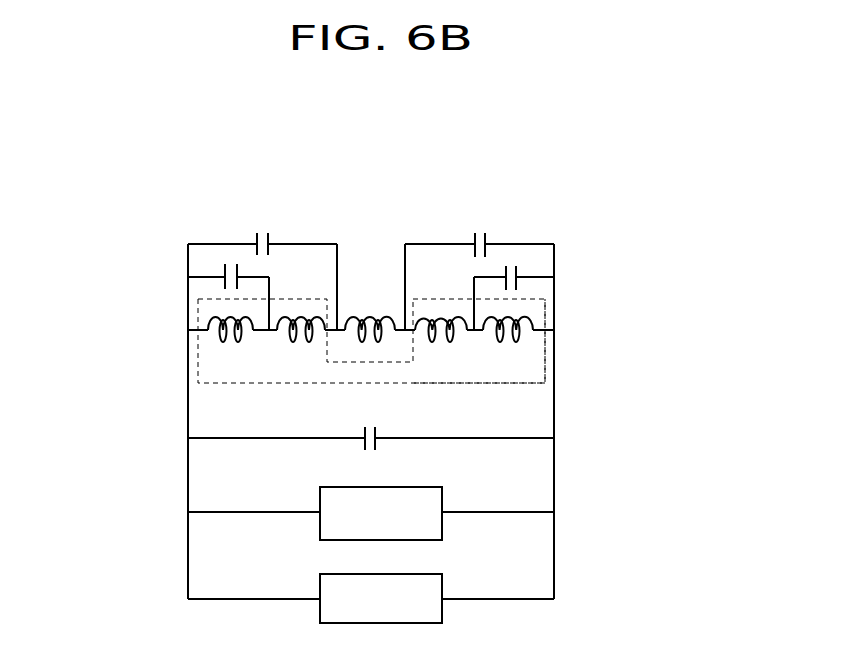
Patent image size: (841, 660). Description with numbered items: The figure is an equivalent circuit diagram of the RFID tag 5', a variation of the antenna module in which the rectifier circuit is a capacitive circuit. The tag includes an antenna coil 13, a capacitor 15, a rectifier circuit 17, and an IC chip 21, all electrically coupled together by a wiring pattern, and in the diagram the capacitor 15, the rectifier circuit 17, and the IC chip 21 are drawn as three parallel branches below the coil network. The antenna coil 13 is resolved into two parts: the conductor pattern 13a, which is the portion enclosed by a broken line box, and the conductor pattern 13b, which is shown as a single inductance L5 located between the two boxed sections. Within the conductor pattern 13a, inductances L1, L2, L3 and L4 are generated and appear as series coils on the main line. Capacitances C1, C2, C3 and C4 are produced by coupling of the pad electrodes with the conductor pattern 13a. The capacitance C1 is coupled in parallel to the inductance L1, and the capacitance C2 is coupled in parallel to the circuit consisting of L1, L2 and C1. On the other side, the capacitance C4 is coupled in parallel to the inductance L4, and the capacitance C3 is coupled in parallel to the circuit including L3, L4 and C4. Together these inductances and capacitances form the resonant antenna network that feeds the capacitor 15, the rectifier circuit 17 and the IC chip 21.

The RFID tag 5' is at (392, 370).
The antenna coil 13 is at (475, 336).
The conductor pattern 13a is at (555, 317).
The conductor pattern 13b is at (357, 369).
The capacitor 15 is at (392, 427).
The rectifier circuit 17 is at (420, 487).
The IC chip 21 is at (420, 574).
The capacitance C1 is at (217, 270).
The capacitance C2 is at (248, 236).
The capacitance C3 is at (494, 239).
The capacitance C4 is at (525, 274).
The inductance L1 is at (230, 348).
The inductance L2 is at (301, 348).
The inductance L3 is at (441, 348).
The inductance L4 is at (508, 348).
The inductance L5 is at (370, 314).